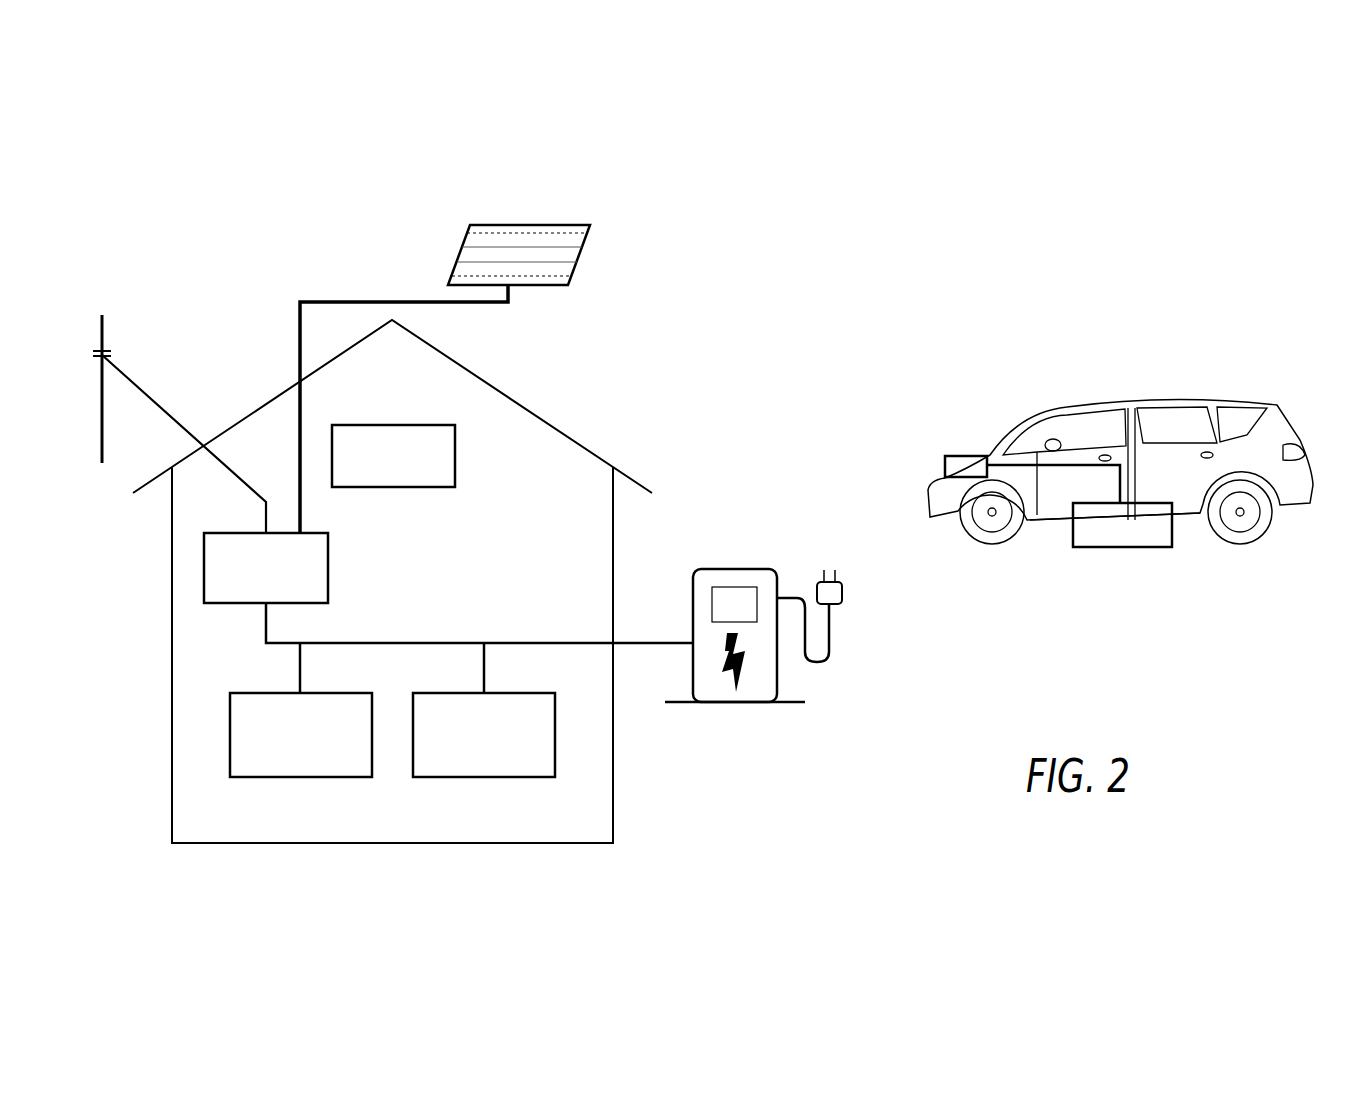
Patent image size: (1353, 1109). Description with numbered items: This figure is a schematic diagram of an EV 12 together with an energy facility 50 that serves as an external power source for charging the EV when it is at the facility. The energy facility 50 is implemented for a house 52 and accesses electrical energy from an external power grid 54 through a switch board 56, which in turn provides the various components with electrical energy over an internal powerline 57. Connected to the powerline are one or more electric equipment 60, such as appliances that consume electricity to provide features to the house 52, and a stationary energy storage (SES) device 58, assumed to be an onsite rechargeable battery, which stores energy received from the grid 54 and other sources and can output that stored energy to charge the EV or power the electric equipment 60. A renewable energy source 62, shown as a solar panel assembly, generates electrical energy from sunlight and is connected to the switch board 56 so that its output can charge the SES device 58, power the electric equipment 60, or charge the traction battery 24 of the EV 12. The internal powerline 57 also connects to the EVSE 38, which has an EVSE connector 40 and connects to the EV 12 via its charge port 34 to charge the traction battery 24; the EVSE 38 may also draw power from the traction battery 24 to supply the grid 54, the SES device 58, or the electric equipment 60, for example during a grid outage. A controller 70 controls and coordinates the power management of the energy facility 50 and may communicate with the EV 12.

The EV 12 is at (1247, 390).
The traction battery 24 is at (1147, 547).
The charge port 34 is at (960, 453).
The EVSE 38 is at (752, 570).
The EVSE connector 40 is at (837, 578).
The energy facility 50 is at (564, 424).
The house 52 is at (172, 815).
The external power grid 54 is at (162, 335).
The switch board 56 is at (330, 555).
The internal powerline 57 is at (442, 642).
The stationary energy storage (SES) device 58 is at (228, 710).
The electric equipment 60 is at (555, 752).
The renewable energy source 62 is at (465, 240).
The controller 70 is at (457, 438).